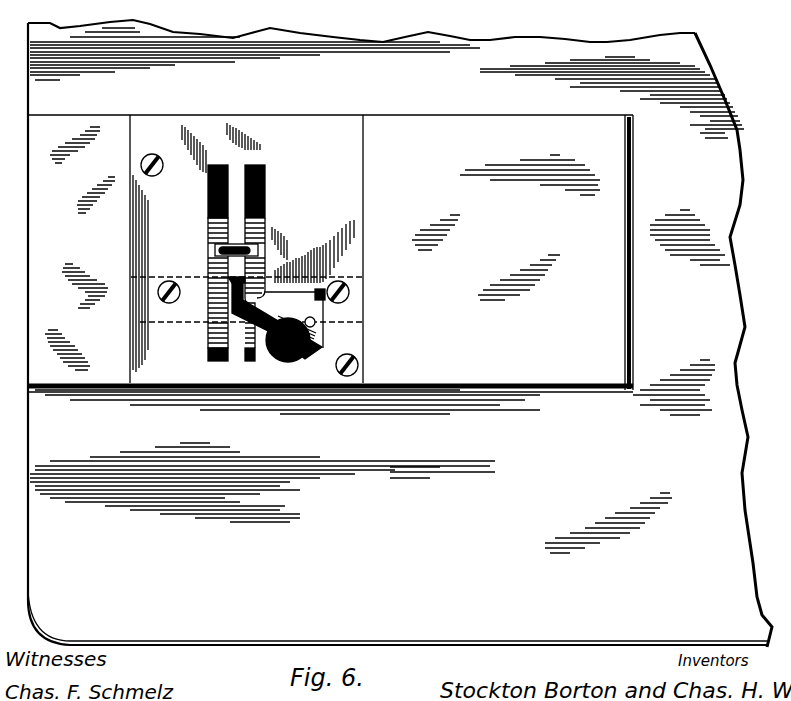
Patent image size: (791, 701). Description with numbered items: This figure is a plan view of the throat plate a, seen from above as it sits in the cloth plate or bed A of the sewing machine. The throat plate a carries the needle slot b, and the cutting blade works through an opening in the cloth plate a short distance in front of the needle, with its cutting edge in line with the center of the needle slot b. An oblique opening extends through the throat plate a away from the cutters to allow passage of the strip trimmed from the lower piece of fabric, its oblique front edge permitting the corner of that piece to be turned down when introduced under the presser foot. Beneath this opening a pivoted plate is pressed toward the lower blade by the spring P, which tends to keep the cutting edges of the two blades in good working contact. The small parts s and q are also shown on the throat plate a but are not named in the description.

The cloth plate A is at (400, 333).
The throat plate a is at (247, 222).
The needle slot b is at (258, 250).
The spring P is at (289, 322).
The stud s is at (236, 284).
The screws q is at (158, 310).